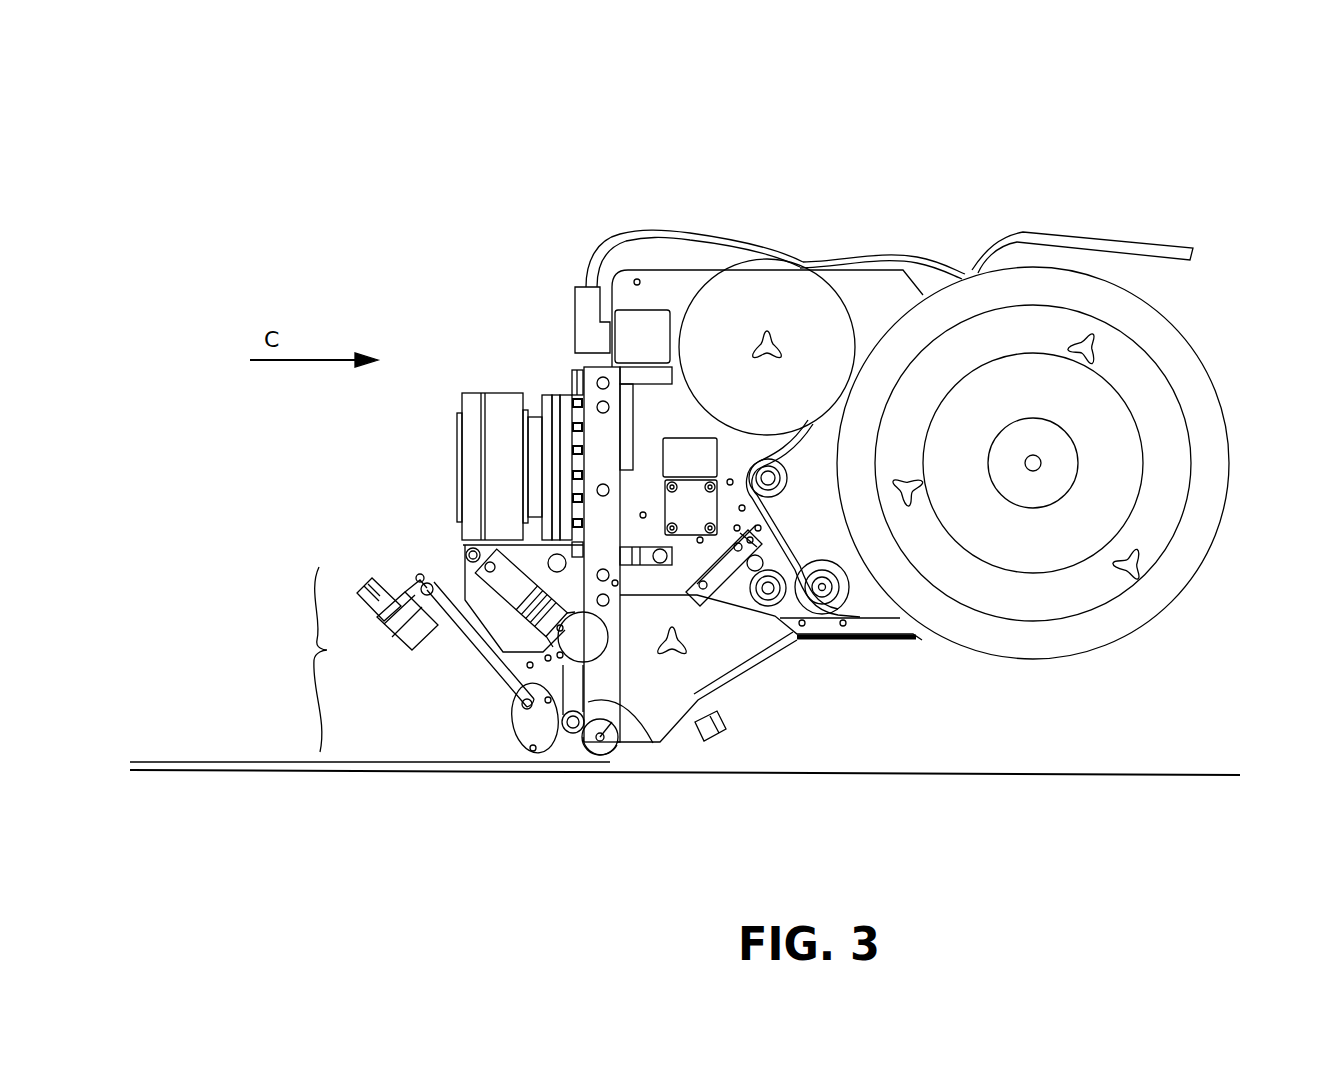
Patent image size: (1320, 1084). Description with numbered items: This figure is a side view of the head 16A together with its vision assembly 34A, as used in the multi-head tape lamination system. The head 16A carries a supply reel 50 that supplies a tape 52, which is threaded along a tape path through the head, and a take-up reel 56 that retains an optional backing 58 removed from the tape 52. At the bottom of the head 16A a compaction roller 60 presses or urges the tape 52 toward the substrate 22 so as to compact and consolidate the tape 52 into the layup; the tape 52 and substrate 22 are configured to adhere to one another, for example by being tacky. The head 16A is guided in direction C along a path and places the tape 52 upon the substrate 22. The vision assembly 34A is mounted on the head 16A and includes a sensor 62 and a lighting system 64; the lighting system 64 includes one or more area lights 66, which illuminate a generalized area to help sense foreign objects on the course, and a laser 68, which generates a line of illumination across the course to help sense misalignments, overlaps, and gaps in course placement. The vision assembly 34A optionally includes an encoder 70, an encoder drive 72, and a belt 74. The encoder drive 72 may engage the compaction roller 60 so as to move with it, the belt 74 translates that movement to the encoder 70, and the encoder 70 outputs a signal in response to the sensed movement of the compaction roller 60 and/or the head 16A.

The head 16A is at (868, 132).
The supply reel 50 is at (1162, 337).
The take-up reel 56 is at (788, 287).
The backing 58 is at (782, 526).
The tape 52 is at (868, 622).
The substrate 22 is at (978, 760).
The vision assembly 34A is at (302, 659).
The laser 68 is at (375, 590).
The sensor 62 is at (417, 605).
The lighting system 64 is at (400, 628).
The encoder 70 is at (590, 645).
The area lights 66 is at (545, 752).
The encoder drive 72 is at (573, 735).
The belt 74 is at (588, 702).
The compaction roller 60 is at (608, 752).